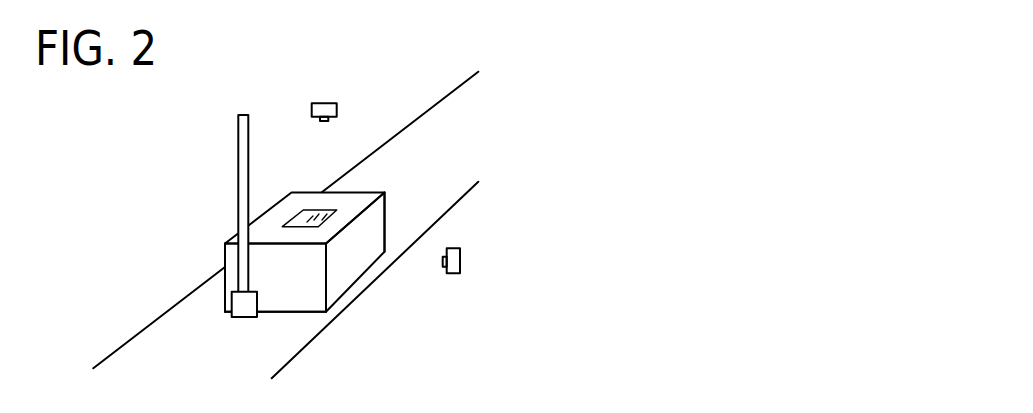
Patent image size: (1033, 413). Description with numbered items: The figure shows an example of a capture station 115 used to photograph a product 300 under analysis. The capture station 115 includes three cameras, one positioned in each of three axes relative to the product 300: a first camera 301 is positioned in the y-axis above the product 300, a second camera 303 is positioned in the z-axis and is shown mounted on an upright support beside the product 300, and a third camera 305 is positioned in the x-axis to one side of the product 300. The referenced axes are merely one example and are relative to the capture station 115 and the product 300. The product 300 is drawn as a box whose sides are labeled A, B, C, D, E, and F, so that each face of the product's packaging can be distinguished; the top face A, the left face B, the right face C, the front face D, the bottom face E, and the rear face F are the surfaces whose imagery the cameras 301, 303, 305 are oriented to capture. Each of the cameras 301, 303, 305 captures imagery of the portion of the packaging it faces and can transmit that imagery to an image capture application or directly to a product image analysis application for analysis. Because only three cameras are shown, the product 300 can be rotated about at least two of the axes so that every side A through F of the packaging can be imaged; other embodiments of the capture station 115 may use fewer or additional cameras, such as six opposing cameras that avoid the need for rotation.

The capture station 115 is at (625, 122).
The product 300 is at (347, 265).
The first camera 301 is at (324, 103).
The second camera 303 is at (232, 302).
The third camera 305 is at (462, 257).
The top face of object A is at (355, 207).
The left face of object B is at (223, 253).
The right face of object C is at (363, 257).
The front face of object D is at (270, 300).
The bottom face of object E is at (317, 312).
The back face of object F is at (385, 218).